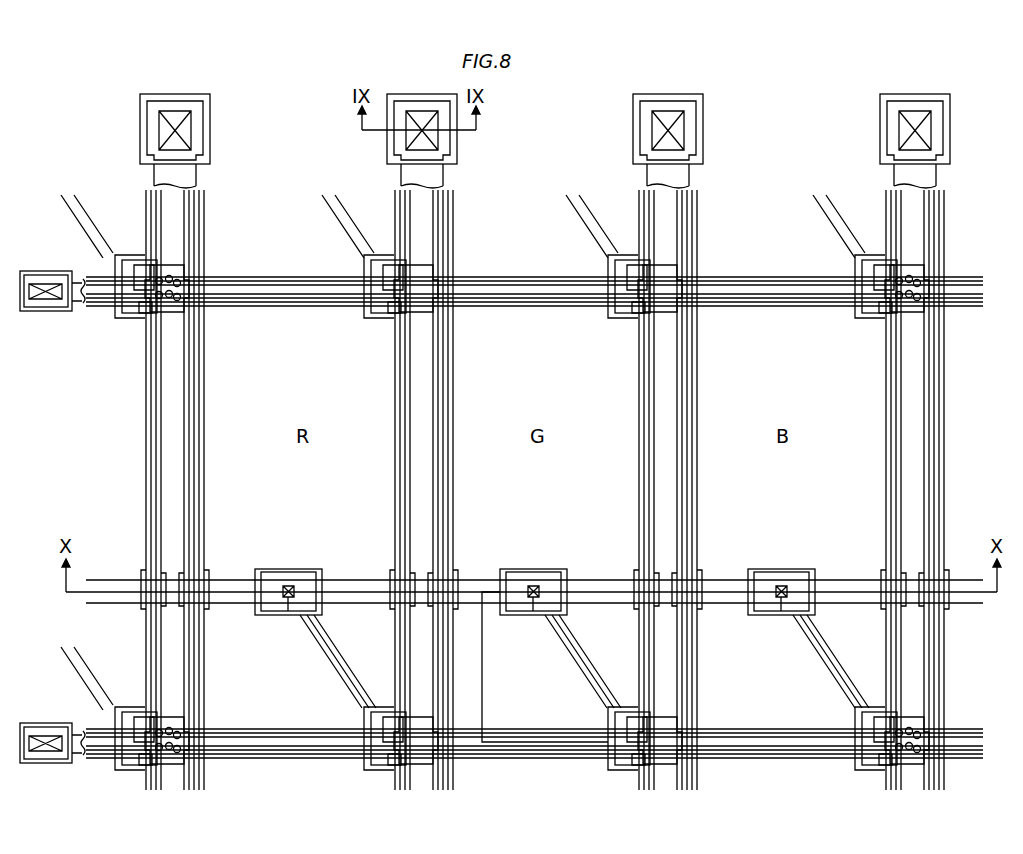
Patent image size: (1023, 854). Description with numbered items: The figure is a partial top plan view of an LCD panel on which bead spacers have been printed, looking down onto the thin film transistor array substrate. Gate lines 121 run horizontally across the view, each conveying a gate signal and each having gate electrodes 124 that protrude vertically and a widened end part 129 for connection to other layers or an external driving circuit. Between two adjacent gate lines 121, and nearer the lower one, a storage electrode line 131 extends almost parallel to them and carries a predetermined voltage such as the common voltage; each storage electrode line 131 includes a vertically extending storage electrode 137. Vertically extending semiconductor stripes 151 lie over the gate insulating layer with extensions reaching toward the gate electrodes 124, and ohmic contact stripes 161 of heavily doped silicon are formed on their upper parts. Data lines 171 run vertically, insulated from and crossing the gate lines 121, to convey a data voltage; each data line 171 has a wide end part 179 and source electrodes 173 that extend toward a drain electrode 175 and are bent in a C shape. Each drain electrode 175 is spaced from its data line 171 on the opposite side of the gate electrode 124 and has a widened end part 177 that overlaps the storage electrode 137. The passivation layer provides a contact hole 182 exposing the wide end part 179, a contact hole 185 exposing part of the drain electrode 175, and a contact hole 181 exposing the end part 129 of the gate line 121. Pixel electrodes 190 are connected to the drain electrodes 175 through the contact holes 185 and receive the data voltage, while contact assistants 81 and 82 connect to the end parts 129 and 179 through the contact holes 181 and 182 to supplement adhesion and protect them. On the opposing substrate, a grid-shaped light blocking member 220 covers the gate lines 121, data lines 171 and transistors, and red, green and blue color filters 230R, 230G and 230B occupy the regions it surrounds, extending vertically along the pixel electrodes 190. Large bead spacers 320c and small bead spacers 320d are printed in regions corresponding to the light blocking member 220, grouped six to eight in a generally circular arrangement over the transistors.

The contact assistant 82 is at (210, 130).
The wide end part 179 is at (146, 130).
The contact hole 182 is at (176, 108).
The light blocking member 220 is at (207, 212).
The large bead spacers 320c is at (184, 272).
The small bead spacers 320d is at (922, 272).
The widened end part 129 is at (40, 272).
The contact assistant 81 is at (54, 288).
The contact hole 181 is at (42, 312).
The gate line 121 is at (281, 270).
The semiconductor stripe 151 is at (383, 259).
The gate electrode 124 is at (370, 320).
The source electrode 173 is at (388, 320).
The ohmic contact stripe 161 is at (195, 356).
The data line 171 is at (147, 374).
The pixel electrode 190 is at (190, 410).
The red color filter 230R is at (205, 478).
The green color filter 230G is at (450, 478).
The blue color filter 230B is at (697, 478).
The widened end part 177 is at (268, 570).
The contact hole 185 is at (290, 586).
The storage electrode 137 is at (316, 570).
The storage electrode line 131 is at (470, 580).
The drain electrode 175 is at (345, 668).